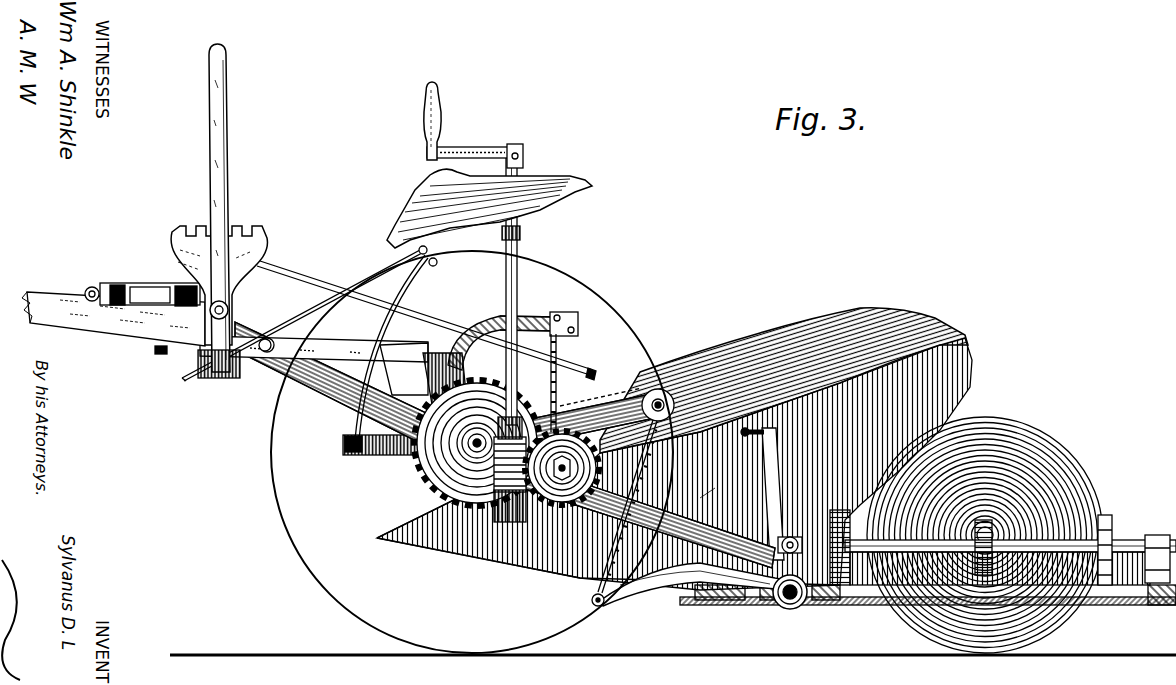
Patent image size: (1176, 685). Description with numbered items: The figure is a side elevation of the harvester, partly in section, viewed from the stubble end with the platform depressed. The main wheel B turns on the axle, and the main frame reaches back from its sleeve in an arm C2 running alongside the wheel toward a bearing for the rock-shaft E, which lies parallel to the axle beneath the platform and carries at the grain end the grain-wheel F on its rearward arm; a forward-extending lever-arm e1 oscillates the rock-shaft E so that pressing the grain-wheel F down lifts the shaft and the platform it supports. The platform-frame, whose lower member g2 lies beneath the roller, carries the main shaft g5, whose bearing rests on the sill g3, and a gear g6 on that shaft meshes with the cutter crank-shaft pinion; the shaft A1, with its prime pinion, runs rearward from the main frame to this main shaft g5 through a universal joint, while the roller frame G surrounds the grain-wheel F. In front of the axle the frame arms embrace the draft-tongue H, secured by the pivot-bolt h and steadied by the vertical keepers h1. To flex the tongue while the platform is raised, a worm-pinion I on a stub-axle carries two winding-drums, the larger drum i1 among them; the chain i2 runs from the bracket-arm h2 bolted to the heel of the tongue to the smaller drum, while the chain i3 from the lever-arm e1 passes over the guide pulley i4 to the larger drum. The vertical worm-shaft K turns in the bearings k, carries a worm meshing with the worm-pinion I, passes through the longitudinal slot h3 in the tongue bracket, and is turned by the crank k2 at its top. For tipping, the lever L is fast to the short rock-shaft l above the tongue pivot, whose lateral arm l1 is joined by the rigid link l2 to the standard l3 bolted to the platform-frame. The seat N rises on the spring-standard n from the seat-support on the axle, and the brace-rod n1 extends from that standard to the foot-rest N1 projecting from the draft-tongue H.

The tipping lever L is at (219, 211).
The lateral arm or crank l1 is at (124, 306).
The short rock-shaft l is at (228, 306).
The foot-rest N1 is at (194, 390).
The pivot-bolt h is at (268, 352).
The brace-rod n1 is at (302, 315).
The spring-standard n is at (391, 349).
The draft-tongue H is at (331, 390).
The vertical guides or keepers h1 is at (491, 374).
The bracket-arm h2 is at (516, 314).
The longitudinal slot h3 is at (556, 316).
The vertical worm-shaft K is at (477, 328).
The bearings k is at (526, 418).
The crank k2 is at (473, 125).
The worm-pinion I is at (562, 483).
The winding-drum i1 is at (575, 493).
The chain i2 is at (564, 383).
The chain i3 is at (613, 485).
The guide pulley i4 is at (657, 392).
The rigid link l2 is at (429, 320).
The standard l3 is at (771, 494).
The shaft A1 is at (704, 492).
The arm C2 is at (645, 515).
The lever-arm e1 is at (690, 584).
The rock-shaft E is at (792, 609).
The main wheel B is at (472, 452).
The bearing block g2 is at (736, 603).
The sill g3 is at (834, 603).
The roller frame G is at (915, 605).
The main shaft g5 is at (1019, 546).
The gear g6 is at (850, 515).
The grain-wheel F is at (985, 535).
The seat N is at (492, 208).